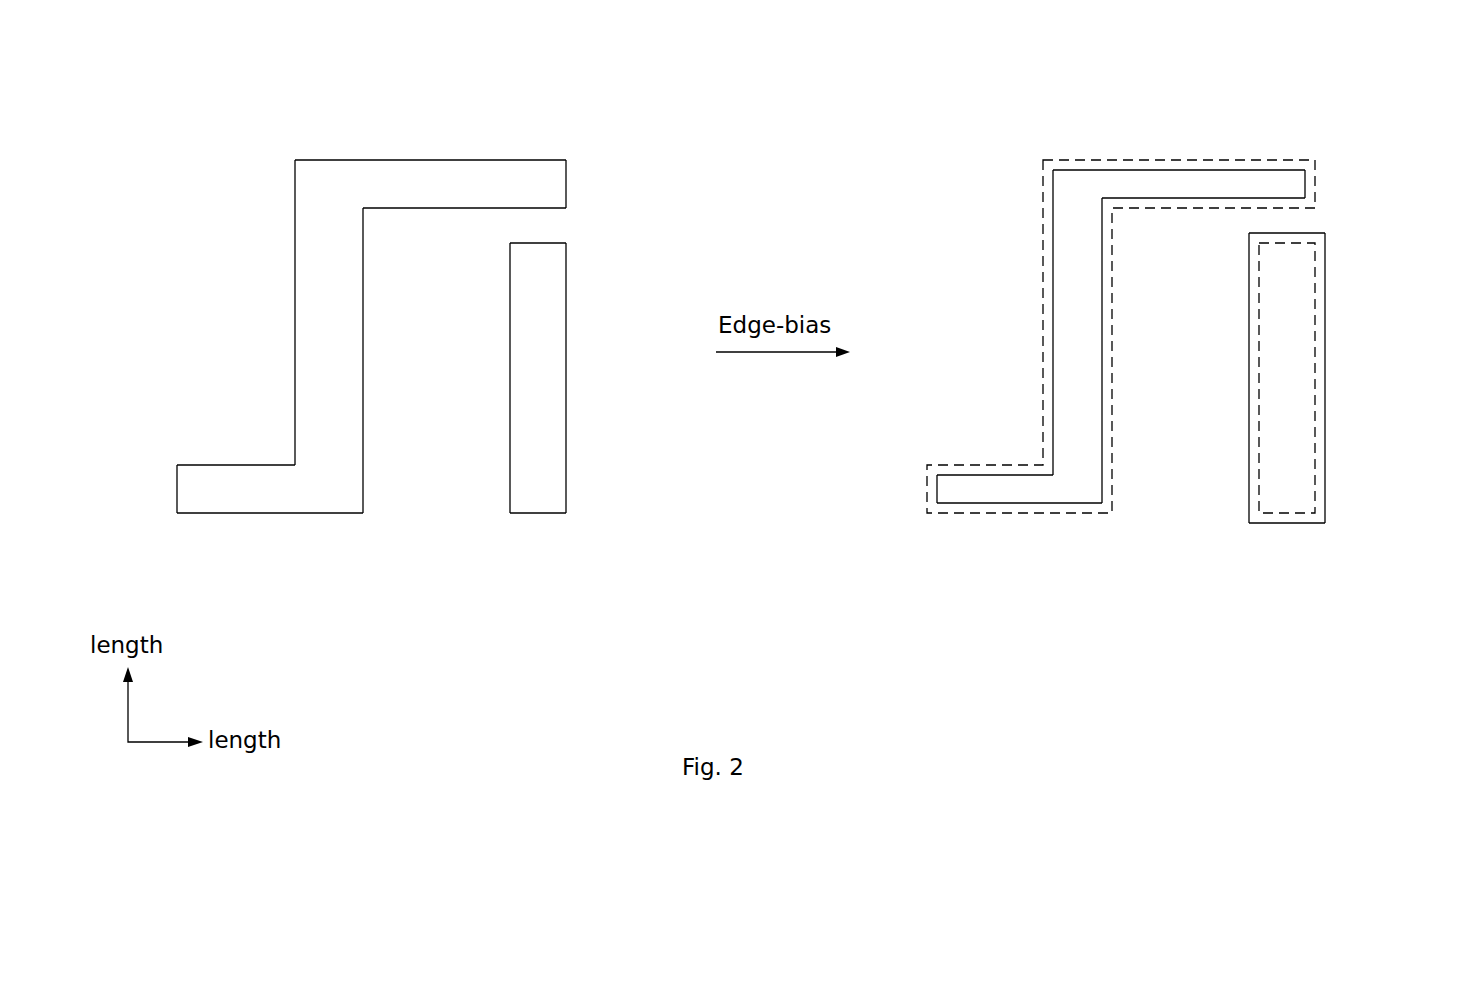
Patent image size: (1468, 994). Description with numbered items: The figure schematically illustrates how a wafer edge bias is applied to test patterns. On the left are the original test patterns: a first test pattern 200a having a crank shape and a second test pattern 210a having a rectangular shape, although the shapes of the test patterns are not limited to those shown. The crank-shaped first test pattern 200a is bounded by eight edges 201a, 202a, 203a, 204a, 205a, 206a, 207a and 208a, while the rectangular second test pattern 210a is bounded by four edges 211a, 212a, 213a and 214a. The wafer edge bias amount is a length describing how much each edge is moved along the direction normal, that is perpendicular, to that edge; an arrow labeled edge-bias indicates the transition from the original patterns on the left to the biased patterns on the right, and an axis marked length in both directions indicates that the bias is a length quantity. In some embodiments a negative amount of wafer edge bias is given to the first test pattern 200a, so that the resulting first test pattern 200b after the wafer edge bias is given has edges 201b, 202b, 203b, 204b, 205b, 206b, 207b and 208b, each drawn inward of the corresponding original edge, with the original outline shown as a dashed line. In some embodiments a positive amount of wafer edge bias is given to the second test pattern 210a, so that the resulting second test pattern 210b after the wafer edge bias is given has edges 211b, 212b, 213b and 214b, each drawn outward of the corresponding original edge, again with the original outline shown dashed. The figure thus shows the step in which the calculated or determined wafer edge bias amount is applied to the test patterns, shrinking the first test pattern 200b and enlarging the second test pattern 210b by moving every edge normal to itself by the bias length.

The first test pattern 200a is at (280, 138).
The edge 201a is at (237, 465).
The edge 202a is at (293, 328).
The edge 203a is at (431, 159).
The edge 204a is at (567, 185).
The edge 205a is at (431, 209).
The edge 206a is at (364, 330).
The edge 207a is at (270, 514).
The edge 208a is at (176, 493).
The second test pattern 210a is at (596, 545).
The edge 211a is at (538, 514).
The edge 212a is at (567, 390).
The edge 213a is at (550, 243).
The edge 214a is at (510, 380).
The first test pattern 200b is at (1028, 138).
The edge 201b is at (985, 475).
The edge 202b is at (1052, 328).
The edge 203b is at (1181, 169).
The edge 204b is at (1306, 185).
The edge 205b is at (1181, 199).
The edge 206b is at (1103, 330).
The edge 207b is at (1018, 504).
The edge 208b is at (936, 490).
The second test pattern 210b is at (1348, 545).
The edge 211b is at (1286, 524).
The edge 212b is at (1326, 392).
The edge 213b is at (1297, 233).
The edge 214b is at (1248, 380).